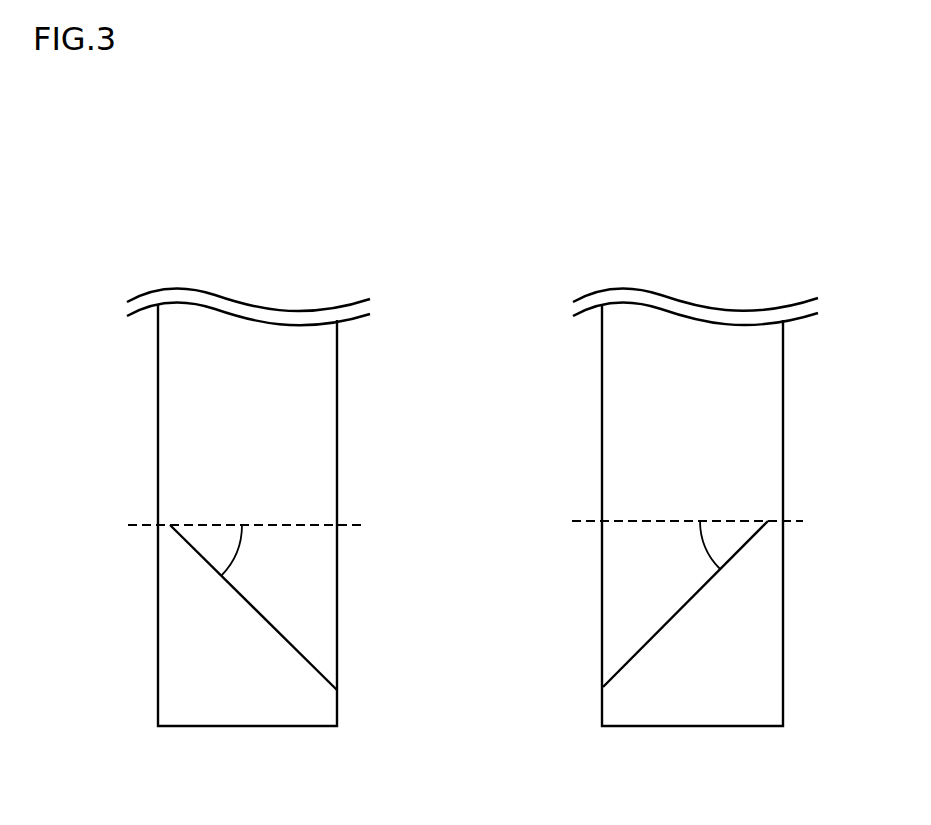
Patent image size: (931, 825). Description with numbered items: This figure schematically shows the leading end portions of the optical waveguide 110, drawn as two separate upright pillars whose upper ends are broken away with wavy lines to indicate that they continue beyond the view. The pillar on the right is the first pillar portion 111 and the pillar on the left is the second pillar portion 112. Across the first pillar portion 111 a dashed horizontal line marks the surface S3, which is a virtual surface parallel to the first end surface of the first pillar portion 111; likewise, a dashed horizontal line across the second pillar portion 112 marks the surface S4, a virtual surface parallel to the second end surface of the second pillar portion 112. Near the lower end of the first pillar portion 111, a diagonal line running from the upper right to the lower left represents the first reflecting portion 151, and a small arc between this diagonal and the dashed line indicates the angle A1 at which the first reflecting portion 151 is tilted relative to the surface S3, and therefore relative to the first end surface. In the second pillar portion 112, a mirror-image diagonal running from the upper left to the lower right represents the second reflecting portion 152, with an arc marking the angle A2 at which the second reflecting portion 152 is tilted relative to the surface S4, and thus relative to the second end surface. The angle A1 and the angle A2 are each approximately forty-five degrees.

The optical waveguide 110 is at (478, 713).
The first pillar portion 111 is at (783, 402).
The second pillar portion 112 is at (337, 402).
The first reflecting portion 151 is at (697, 597).
The second reflecting portion 152 is at (237, 593).
The surface S3 is at (587, 523).
The surface S4 is at (347, 525).
The angle A1 is at (694, 546).
The angle A2 is at (252, 550).